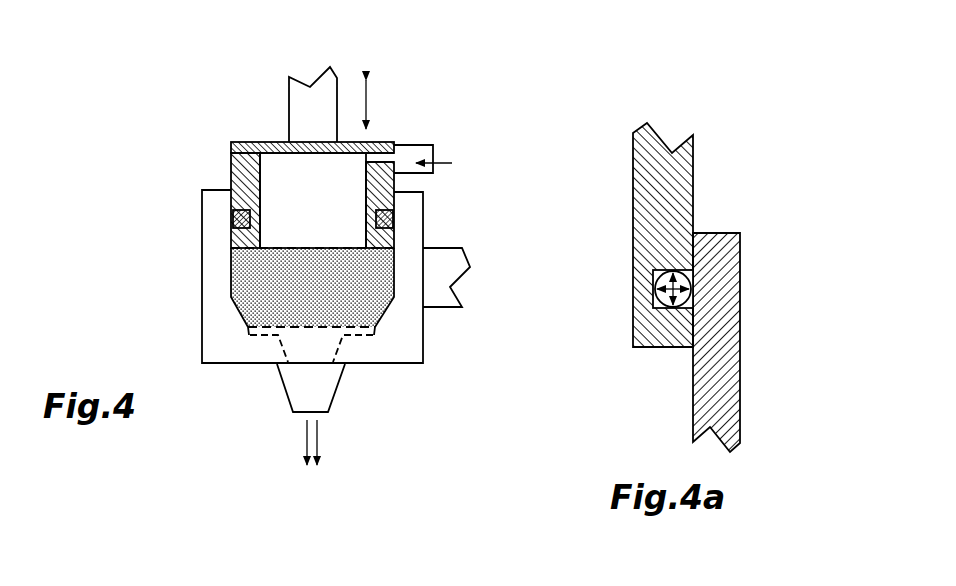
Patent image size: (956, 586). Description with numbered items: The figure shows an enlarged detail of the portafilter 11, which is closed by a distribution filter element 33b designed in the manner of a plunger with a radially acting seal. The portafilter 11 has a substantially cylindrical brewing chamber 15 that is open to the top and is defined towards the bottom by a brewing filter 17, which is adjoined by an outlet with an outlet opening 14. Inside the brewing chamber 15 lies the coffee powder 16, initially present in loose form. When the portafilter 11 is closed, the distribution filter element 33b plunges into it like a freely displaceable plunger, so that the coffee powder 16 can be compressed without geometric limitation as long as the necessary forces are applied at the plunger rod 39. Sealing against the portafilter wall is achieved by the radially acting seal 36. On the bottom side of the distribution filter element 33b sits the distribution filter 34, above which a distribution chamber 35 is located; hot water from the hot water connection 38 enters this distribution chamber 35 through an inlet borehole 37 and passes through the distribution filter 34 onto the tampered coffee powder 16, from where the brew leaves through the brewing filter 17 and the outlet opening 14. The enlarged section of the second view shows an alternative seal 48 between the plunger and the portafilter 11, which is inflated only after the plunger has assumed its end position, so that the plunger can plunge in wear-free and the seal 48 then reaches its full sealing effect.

In FIG. 4, the portafilter 11 is at (445, 376).
In FIG. 4A, the portafilter 11 is at (730, 385).
In FIG. 4, the outlet opening 14 is at (318, 383).
In FIG. 4, the brewing chamber 15 is at (230, 297).
In FIG. 4, the coffee powder 16 is at (357, 307).
In FIG. 4, the brewing filter 17 is at (266, 335).
In FIG. 4, the distribution filter element 33b is at (206, 141).
In FIG. 4A, the distribution filter element 33b is at (683, 173).
In FIG. 4, the distribution filter 34 is at (288, 245).
In FIG. 4, the distribution chamber 35 is at (337, 191).
In FIG. 4, the radially acting seal 36 is at (243, 220).
In FIG. 4, the inlet borehole 37 is at (387, 145).
In FIG. 4, the hot water connection 38 is at (435, 143).
In FIG. 4, the plunger rod 39 is at (327, 93).
In FIG. 4A, the inflatable seal 48 is at (652, 273).